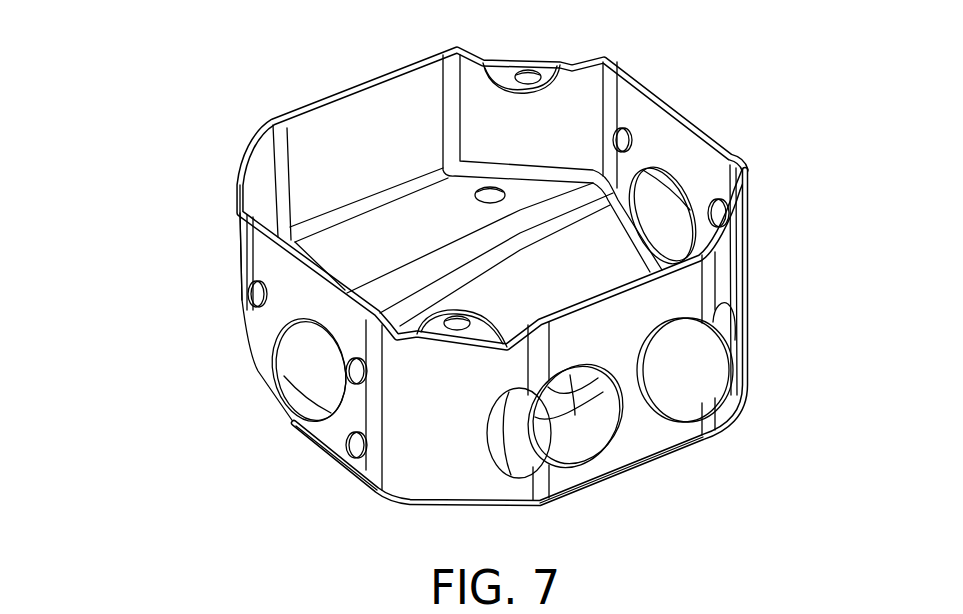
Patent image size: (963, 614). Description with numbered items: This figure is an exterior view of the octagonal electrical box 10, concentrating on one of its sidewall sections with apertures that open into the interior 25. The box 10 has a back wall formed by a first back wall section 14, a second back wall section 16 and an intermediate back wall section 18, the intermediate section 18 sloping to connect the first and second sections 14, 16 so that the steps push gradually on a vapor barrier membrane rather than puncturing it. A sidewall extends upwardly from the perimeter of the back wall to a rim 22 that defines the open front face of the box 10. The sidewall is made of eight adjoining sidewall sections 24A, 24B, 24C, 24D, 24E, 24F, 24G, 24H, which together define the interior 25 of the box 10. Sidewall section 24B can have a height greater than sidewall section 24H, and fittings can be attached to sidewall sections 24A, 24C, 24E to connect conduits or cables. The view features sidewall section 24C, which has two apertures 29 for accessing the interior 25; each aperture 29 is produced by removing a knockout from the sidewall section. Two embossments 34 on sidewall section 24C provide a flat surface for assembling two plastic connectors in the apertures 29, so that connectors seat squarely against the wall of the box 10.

The octagonal electrical box 10 is at (178, 322).
The first back wall section 14 is at (528, 183).
The second back wall section 16 is at (598, 268).
The intermediate back wall section 18 is at (652, 152).
The rim 22 is at (272, 120).
The sidewall section 24A is at (693, 157).
The sidewall section 24B is at (740, 247).
The sidewall section 24C is at (660, 440).
The sidewall section 24D is at (437, 440).
The sidewall section 24E is at (330, 437).
The sidewall section 24F is at (247, 232).
The sidewall section 24G is at (368, 121).
The sidewall section 24H is at (583, 107).
The interior 25 is at (487, 125).
The aperture 29 is at (578, 440).
The embossment 34 is at (524, 445).